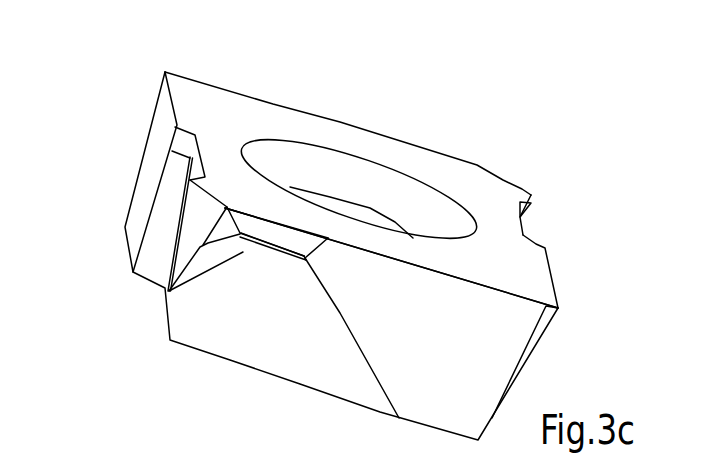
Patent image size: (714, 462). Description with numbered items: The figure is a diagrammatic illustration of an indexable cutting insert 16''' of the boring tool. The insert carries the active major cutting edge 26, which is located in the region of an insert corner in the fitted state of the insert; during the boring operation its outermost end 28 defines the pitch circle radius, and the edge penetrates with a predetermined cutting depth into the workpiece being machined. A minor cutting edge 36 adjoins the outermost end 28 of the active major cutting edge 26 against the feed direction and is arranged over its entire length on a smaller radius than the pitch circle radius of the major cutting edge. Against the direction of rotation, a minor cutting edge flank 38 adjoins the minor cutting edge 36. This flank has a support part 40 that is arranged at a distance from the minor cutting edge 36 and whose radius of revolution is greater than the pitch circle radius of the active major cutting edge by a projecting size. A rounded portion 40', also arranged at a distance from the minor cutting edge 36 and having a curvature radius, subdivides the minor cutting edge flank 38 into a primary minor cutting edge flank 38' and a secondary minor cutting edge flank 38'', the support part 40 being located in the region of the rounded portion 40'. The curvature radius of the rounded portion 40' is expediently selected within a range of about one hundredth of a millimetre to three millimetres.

The cutting insert 16''' is at (378, 256).
The active major cutting edge 26 is at (358, 171).
The outermost end 28 is at (227, 208).
The minor cutting edge 36 is at (359, 139).
The minor cutting edge flank 38 is at (391, 172).
The primary minor cutting edge flank 38' is at (266, 122).
The secondary minor cutting edge flank 38'' is at (134, 281).
The support part 40 is at (313, 312).
The rounded portion 40' is at (272, 244).